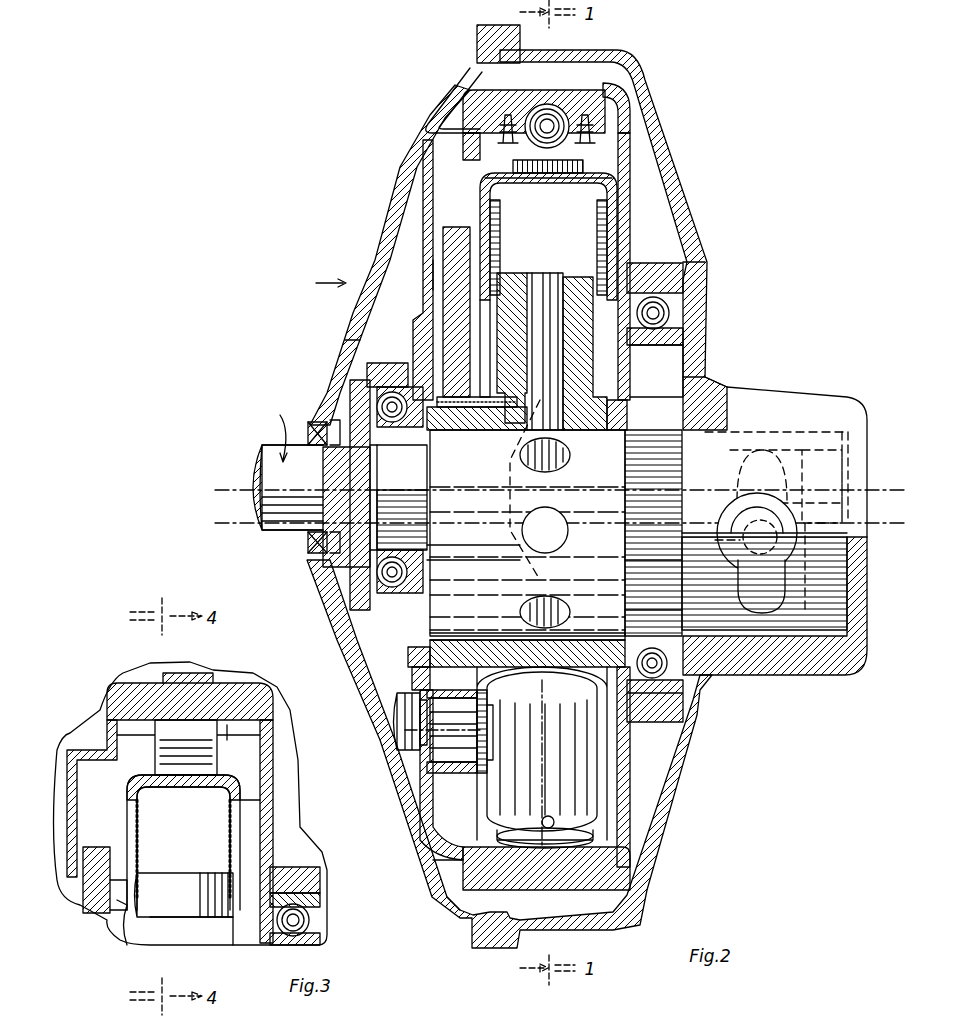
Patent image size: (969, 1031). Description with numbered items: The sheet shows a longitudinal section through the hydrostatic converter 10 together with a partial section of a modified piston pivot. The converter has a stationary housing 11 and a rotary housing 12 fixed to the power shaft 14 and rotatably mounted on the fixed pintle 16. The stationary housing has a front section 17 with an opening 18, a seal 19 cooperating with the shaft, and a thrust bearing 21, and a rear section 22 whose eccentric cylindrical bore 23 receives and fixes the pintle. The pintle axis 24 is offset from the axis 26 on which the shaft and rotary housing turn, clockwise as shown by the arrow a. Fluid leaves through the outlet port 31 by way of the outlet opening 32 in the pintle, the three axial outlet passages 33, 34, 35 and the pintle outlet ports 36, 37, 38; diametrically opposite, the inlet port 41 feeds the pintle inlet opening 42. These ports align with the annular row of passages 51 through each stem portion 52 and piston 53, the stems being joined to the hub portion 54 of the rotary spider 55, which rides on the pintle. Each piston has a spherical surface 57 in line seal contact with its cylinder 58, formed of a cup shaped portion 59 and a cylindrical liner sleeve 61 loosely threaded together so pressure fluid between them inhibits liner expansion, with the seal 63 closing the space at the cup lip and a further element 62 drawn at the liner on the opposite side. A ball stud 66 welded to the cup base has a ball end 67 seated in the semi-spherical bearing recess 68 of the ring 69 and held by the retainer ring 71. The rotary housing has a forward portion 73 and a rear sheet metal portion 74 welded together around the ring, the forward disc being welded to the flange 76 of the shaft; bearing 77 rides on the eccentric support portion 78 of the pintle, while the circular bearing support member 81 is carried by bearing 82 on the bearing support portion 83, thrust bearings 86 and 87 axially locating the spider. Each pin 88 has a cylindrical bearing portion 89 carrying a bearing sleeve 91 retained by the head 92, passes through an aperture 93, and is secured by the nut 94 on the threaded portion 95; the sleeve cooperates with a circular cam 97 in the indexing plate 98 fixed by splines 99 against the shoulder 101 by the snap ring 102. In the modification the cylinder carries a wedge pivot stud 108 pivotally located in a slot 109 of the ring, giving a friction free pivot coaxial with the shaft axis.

In FIG. 2, the hydrostatic converter 10 is at (316, 283).
In FIG. 2, the stationary housing 11 is at (462, 90).
In FIG. 2, the rotary housing 12 is at (418, 172).
In FIG. 3, the rotary housing 12 is at (115, 686).
In FIG. 2, the power shaft 14 is at (262, 475).
In FIG. 2, the pintle 16 is at (725, 420).
In FIG. 2, the front section 17 is at (345, 340).
In FIG. 2, the opening 18 is at (315, 551).
In FIG. 2, the seal 19 is at (315, 422).
In FIG. 2, the thrust bearing 21 is at (362, 440).
In FIG. 2, the rear section 22 is at (705, 295).
In FIG. 2, the eccentric cylindrical bore 23 is at (790, 432).
In FIG. 2, the pintle axis 24 is at (468, 545).
In FIG. 2, the power shaft axis 26 is at (430, 540).
In FIG. 2, the outlet port 31 is at (757, 553).
In FIG. 2, the outlet opening 32 is at (740, 590).
In FIG. 2, the axial outlet passage 33 is at (628, 498).
In FIG. 2, the axial outlet passage 34 is at (653, 533).
In FIG. 2, the axial outlet passage 35 is at (653, 585).
In FIG. 2, the pintle outlet port 36 is at (568, 458).
In FIG. 2, the pintle outlet port 37 is at (568, 520).
In FIG. 2, the pintle outlet port 38 is at (566, 605).
In FIG. 2, the inlet port 41 is at (713, 544).
In FIG. 2, the pintle inlet opening 42 is at (790, 480).
In FIG. 2, the passage 51 is at (578, 366).
In FIG. 3, the stem portion 52 is at (160, 945).
In FIG. 2, the piston 53 is at (513, 278).
In FIG. 3, the piston 53 is at (175, 890).
In FIG. 2, the hub portion 54 is at (500, 410).
In FIG. 2, the rotary spider 55 is at (618, 376).
In FIG. 3, the rotary spider 55 is at (148, 937).
In FIG. 2, the spherical surface 57 is at (578, 285).
In FIG. 3, the spherical surface 57 is at (228, 912).
In FIG. 2, the cylinder 58 is at (612, 200).
In FIG. 3, the cylinder 58 is at (250, 800).
In FIG. 2, the cup shaped portion 59 is at (482, 186).
In FIG. 3, the cup shaped portion 59 is at (240, 790).
In FIG. 2, the cylindrical liner sleeve 61 is at (488, 210).
In FIG. 3, the cylindrical liner sleeve 61 is at (135, 812).
In FIG. 2, the seal ring 62 is at (498, 245).
In FIG. 2, the seal 63 is at (484, 300).
In FIG. 3, the seal 63 is at (117, 915).
In FIG. 2, the ball stud 66 is at (585, 165).
In FIG. 2, the ball end 67 is at (538, 118).
In FIG. 2, the semi-spherical bearing recess 68 is at (562, 112).
In FIG. 2, the ring 69 is at (625, 95).
In FIG. 3, the ring 69 is at (209, 797).
In FIG. 2, the retainer ring 71 is at (505, 140).
In FIG. 2, the forward portion 73 is at (428, 256).
In FIG. 3, the forward portion 73 is at (66, 750).
In FIG. 2, the rear sheet metal portion 74 is at (632, 150).
In FIG. 3, the rear sheet metal portion 74 is at (265, 725).
In FIG. 2, the flange 76 is at (382, 362).
In FIG. 2, the bearing 77 is at (396, 422).
In FIG. 2, the cylindrical eccentric support portion 78 is at (415, 470).
In FIG. 2, the circular bearing support member 81 is at (648, 266).
In FIG. 3, the circular bearing support member 81 is at (300, 880).
In FIG. 2, the bearing 82 is at (670, 312).
In FIG. 3, the bearing 82 is at (305, 917).
In FIG. 2, the cylindrical bearing support portion 83 is at (690, 380).
In FIG. 2, the thrust bearing 86 is at (622, 420).
In FIG. 2, the thrust bearing 87 is at (420, 430).
In FIG. 2, the pin 88 is at (490, 765).
In FIG. 2, the cylindrical bearing portion 89 is at (487, 750).
In FIG. 2, the bearing sleeve 91 is at (473, 702).
In FIG. 2, the head 92 is at (480, 725).
In FIG. 2, the aperture 93 is at (418, 775).
In FIG. 2, the nut 94 is at (413, 700).
In FIG. 2, the threaded portion 95 is at (400, 722).
In FIG. 2, the circular cam 97 is at (440, 860).
In FIG. 2, the indexing plate 98 is at (425, 678).
In FIG. 3, the indexing plate 98 is at (90, 913).
In FIG. 2, the splines 99 is at (445, 645).
In FIG. 2, the shoulder 101 is at (510, 665).
In FIG. 2, the snap ring 102 is at (425, 652).
In FIG. 3, the wedge pivot stud 108 is at (170, 738).
In FIG. 3, the slot 109 is at (241, 743).
In FIG. 2, the arrow a is at (277, 429).